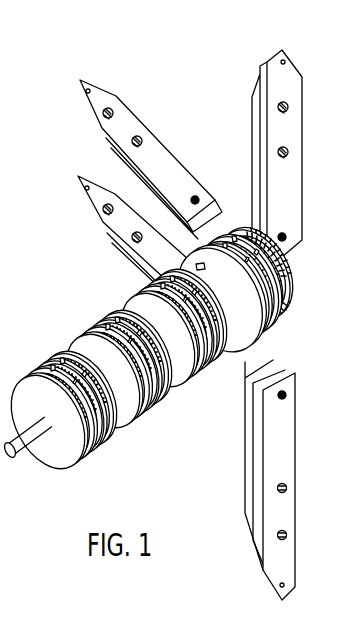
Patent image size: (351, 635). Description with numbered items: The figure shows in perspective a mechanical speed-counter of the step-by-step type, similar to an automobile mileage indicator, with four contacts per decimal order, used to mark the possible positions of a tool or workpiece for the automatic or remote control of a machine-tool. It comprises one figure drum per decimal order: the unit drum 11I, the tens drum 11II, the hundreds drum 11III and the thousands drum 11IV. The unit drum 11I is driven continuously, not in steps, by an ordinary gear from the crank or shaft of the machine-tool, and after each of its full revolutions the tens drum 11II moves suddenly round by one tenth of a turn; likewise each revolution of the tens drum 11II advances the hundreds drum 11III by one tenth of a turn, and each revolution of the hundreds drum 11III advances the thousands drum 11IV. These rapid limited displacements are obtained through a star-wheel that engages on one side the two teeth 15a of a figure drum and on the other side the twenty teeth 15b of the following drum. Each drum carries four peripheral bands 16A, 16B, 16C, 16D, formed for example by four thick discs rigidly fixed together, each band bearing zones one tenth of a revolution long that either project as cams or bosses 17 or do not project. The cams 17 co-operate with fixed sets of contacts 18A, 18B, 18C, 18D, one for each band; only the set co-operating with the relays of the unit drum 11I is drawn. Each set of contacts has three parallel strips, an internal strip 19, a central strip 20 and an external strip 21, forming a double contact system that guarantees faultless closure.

The unit drum 11I is at (225, 283).
The tens drum 11II is at (185, 373).
The hundreds drum 11III is at (125, 412).
The thousands drum 11IV is at (63, 447).
The two teeth of a figure drum 15a is at (198, 267).
The twenty teeth of the following figure drum 15b is at (163, 280).
The peripheral band 16A is at (270, 327).
The peripheral band 16B is at (202, 263).
The peripheral band 16C is at (282, 312).
The peripheral band 16D is at (240, 256).
The cam or boss 17 is at (270, 290).
The set of contacts 18A is at (286, 371).
The set of contacts 18B is at (103, 228).
The set of contacts 18C is at (97, 128).
The set of contacts 18D is at (268, 60).
The internal strip 19 is at (246, 431).
The central strip 20 is at (258, 459).
The external strip 21 is at (268, 488).